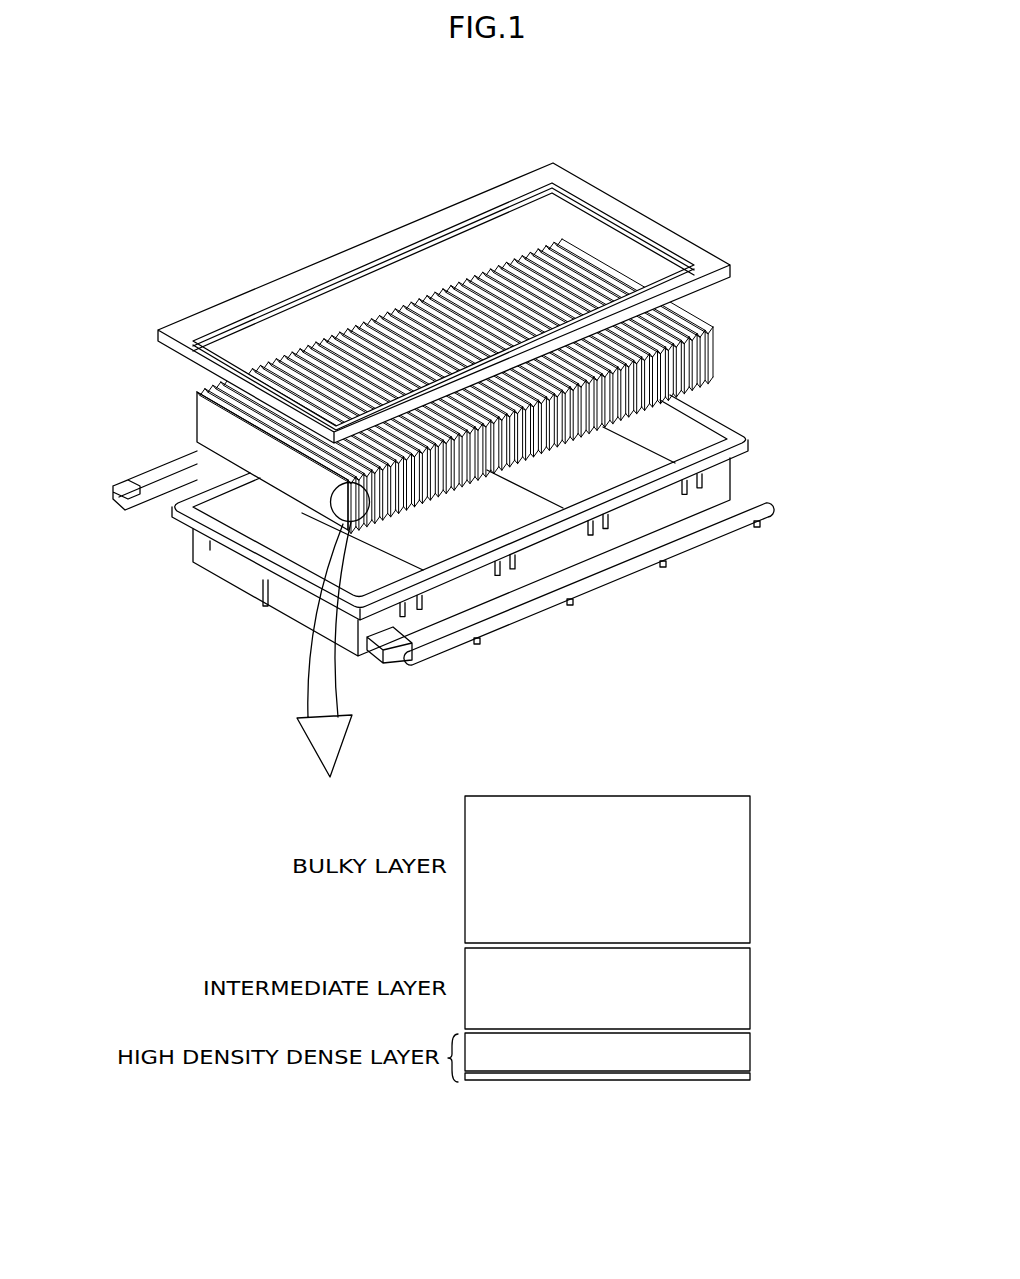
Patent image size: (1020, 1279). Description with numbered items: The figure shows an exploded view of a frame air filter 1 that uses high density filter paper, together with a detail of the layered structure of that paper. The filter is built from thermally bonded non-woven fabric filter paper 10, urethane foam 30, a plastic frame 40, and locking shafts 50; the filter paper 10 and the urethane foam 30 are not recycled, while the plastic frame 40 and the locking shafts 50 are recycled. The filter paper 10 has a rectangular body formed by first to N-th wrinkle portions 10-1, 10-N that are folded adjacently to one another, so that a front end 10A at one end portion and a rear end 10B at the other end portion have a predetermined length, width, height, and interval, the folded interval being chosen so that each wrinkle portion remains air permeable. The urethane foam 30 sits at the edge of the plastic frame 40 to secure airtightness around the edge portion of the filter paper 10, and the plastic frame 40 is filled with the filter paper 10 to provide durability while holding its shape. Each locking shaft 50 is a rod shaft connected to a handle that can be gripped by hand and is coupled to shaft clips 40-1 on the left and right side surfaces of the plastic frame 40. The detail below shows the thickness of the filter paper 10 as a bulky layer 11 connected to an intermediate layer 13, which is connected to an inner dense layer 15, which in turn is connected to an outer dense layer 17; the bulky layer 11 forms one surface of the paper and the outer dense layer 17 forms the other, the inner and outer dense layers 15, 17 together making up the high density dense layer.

The frame air filter 1 is at (249, 256).
The thermally bonded non-woven fabric filter paper 10 is at (663, 373).
The first wrinkle portion 10-1 is at (343, 438).
The N-th wrinkle portion 10-N is at (700, 327).
The front end 10A is at (300, 477).
The rear end 10B is at (713, 335).
The urethane foam 30 is at (693, 247).
The plastic frame 40 is at (735, 438).
The shaft clips 40-1 is at (513, 553).
The locking shaft 50 is at (153, 475).
The bulky layer 11 is at (733, 873).
The intermediate layer 13 is at (743, 991).
The inner dense layer 15 is at (744, 1054).
The outer dense layer 17 is at (750, 1077).